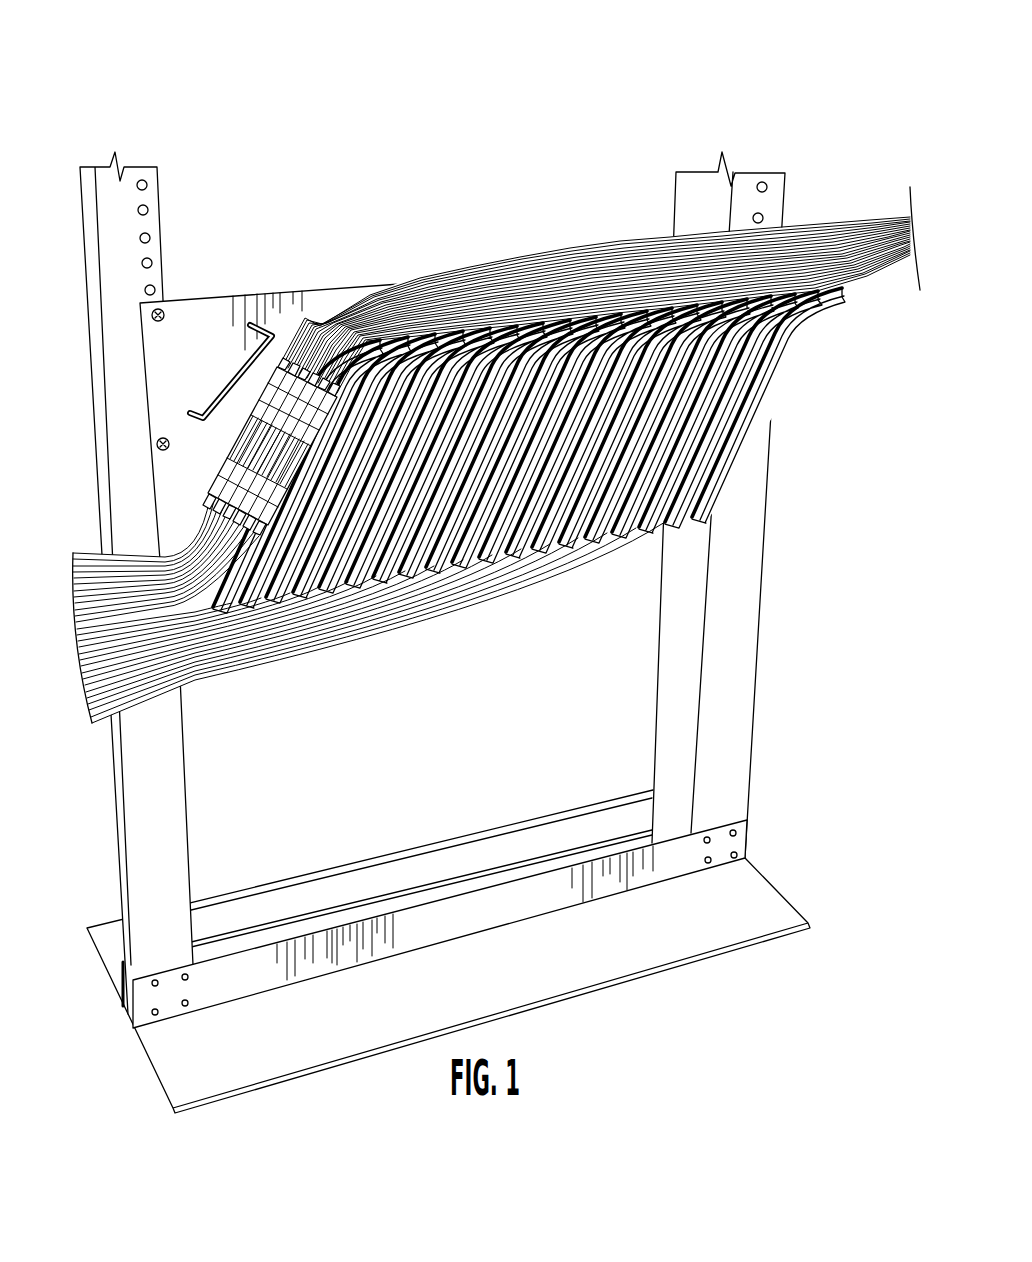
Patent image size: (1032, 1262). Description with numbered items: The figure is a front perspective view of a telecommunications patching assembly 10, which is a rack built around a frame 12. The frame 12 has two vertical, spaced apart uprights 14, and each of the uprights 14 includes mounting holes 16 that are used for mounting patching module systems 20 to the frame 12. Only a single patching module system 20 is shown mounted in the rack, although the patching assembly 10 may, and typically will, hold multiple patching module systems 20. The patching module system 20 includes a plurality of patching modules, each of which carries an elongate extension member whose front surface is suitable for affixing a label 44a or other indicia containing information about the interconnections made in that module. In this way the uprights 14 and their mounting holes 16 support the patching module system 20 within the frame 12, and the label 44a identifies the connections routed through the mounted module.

The telecommunications patching assembly 10 is at (477, 566).
The frame 12 is at (448, 629).
The uprights 14 is at (440, 580).
The mounting holes 16 is at (766, 186).
The patching module system 20 is at (803, 432).
The label 44a is at (287, 512).